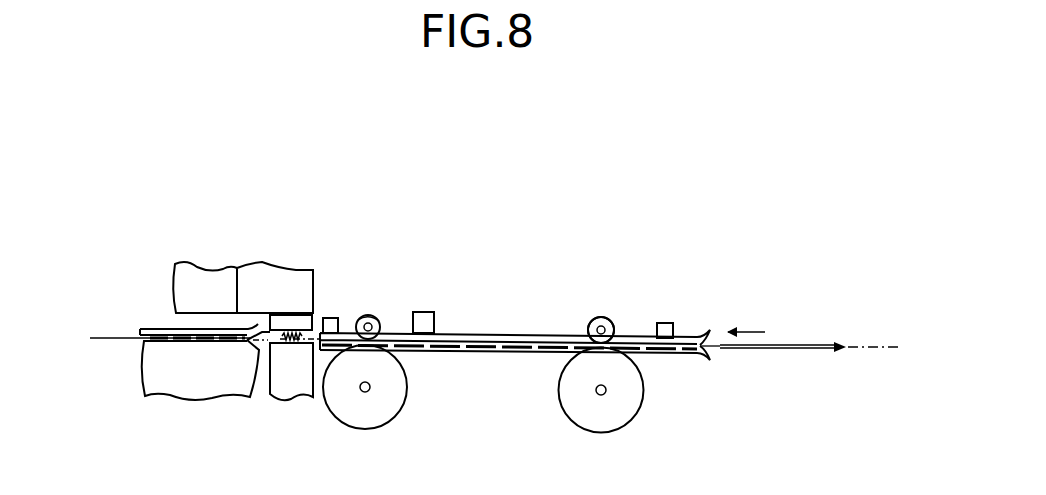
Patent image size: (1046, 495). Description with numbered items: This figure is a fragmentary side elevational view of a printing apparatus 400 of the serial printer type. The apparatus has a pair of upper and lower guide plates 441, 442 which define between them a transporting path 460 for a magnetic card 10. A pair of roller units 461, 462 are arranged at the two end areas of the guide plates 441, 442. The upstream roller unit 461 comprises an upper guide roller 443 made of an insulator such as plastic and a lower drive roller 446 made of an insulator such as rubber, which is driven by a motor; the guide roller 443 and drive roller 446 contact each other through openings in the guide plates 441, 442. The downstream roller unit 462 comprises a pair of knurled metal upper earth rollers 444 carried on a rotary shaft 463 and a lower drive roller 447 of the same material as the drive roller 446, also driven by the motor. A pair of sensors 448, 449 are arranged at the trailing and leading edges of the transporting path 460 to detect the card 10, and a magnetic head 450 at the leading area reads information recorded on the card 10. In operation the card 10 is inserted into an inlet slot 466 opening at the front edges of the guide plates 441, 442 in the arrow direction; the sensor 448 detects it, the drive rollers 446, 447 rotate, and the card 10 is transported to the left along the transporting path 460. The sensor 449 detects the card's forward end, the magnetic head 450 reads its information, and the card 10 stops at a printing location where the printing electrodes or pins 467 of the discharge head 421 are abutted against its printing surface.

The magnetic card 10 is at (805, 348).
The printing apparatus 400 is at (212, 212).
The discharge head 421 is at (260, 273).
The upper guide plate 441 is at (520, 337).
The lower guide plate 442 is at (515, 353).
The upper guide roller 443 is at (601, 317).
The upper earth rollers 444 is at (379, 321).
The lower drive roller 446 is at (628, 413).
The lower drive roller 447 is at (388, 412).
The sensor 448 is at (663, 323).
The sensor 449 is at (342, 318).
The magnetic head 450 is at (430, 322).
The transporting path 460 is at (113, 338).
The roller unit 461 is at (634, 296).
The roller unit 462 is at (370, 300).
The rotary shaft 463 is at (374, 324).
The inlet slot 466 is at (712, 338).
The printing electrodes or pins 467 is at (262, 353).